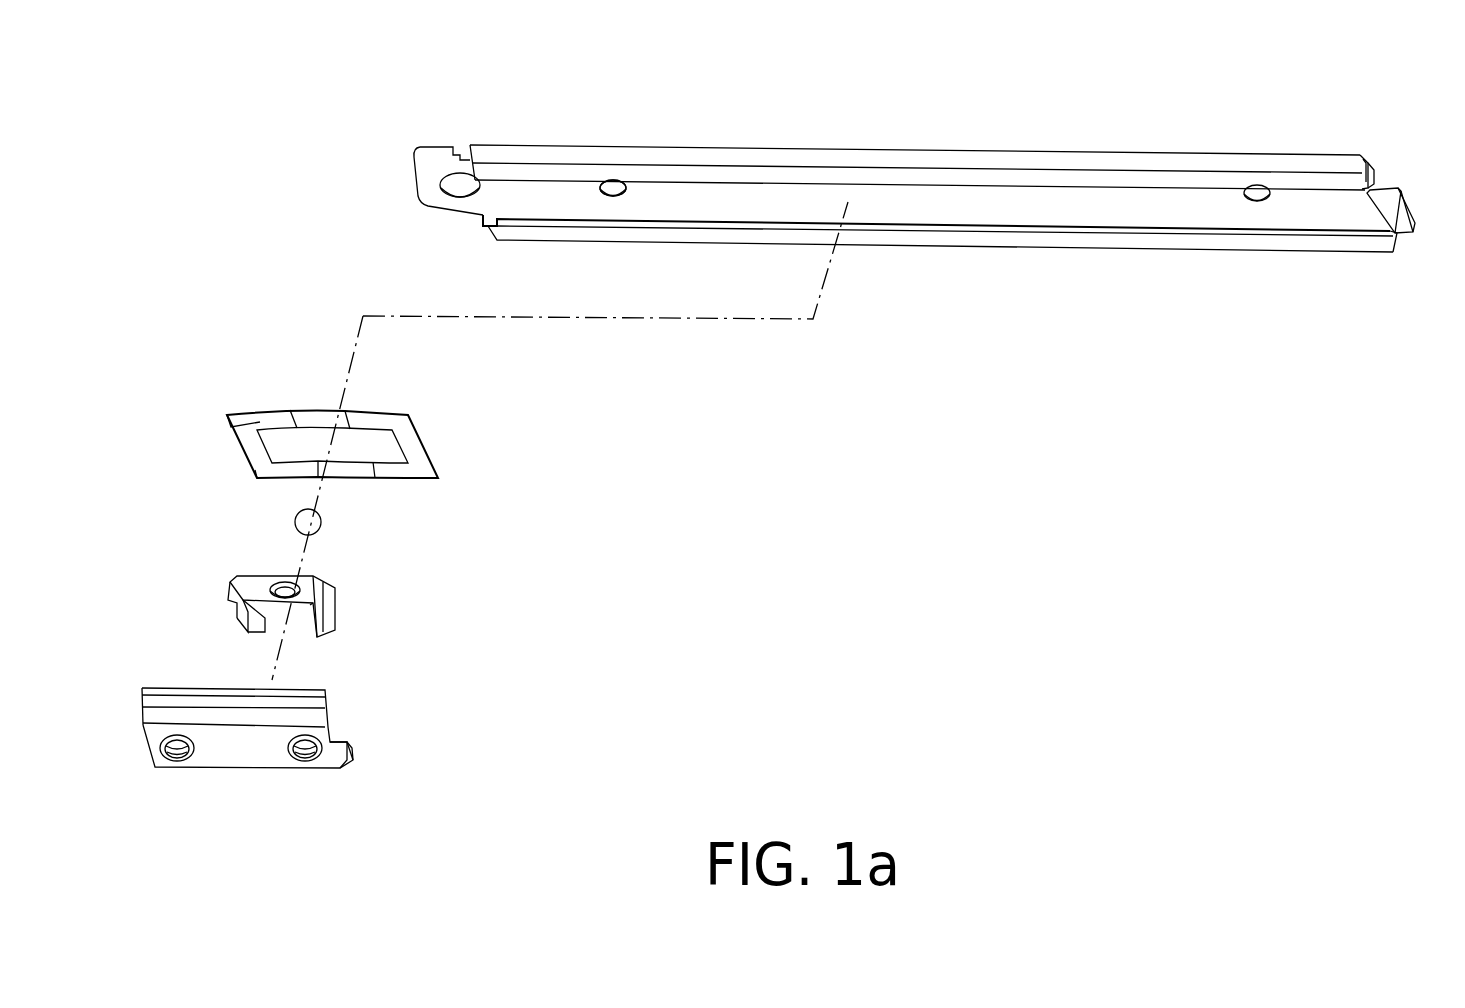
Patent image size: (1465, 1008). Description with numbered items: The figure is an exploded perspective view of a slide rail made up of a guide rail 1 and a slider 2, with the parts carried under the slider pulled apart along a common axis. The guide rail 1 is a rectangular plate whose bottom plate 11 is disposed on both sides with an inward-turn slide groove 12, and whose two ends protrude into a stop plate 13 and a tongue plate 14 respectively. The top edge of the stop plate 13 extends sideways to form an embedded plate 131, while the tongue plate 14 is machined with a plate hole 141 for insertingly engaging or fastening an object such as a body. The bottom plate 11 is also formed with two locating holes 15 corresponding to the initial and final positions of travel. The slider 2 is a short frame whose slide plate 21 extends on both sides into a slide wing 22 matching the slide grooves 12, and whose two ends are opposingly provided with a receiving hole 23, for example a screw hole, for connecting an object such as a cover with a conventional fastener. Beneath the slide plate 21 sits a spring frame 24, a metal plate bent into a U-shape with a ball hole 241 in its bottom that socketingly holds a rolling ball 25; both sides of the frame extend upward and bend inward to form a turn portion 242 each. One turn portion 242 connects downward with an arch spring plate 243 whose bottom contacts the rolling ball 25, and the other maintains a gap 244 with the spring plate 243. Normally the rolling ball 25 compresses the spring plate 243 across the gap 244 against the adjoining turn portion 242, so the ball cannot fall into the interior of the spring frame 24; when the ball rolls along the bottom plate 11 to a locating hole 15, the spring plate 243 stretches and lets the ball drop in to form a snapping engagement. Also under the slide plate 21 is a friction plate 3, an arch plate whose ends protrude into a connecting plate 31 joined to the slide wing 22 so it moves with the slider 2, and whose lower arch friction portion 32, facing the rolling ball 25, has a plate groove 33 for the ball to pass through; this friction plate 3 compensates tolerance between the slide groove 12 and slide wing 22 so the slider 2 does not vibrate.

The guide rail 1 is at (935, 202).
The bottom plate 11 is at (932, 212).
The slide groove 12 is at (1365, 170).
The stop plate 13 is at (1378, 183).
The embedded plate 131 is at (1402, 222).
The tongue plate 14 is at (434, 148).
The plate hole 141 is at (465, 190).
The locating hole 15 is at (620, 183).
The slider 2 is at (291, 759).
The slide plate 21 is at (252, 763).
The slide wing 22 is at (320, 705).
The receiving hole 23 is at (303, 767).
The spring frame 24 is at (316, 557).
The ball hole 241 is at (270, 578).
The turn portion 242 is at (242, 602).
The spring plate 243 is at (268, 628).
The gap 244 is at (242, 622).
The rolling ball 25 is at (322, 520).
The friction plate 3 is at (282, 392).
The connecting plate 31 is at (228, 428).
The arch friction portion 32 is at (318, 418).
The plate groove 33 is at (375, 440).